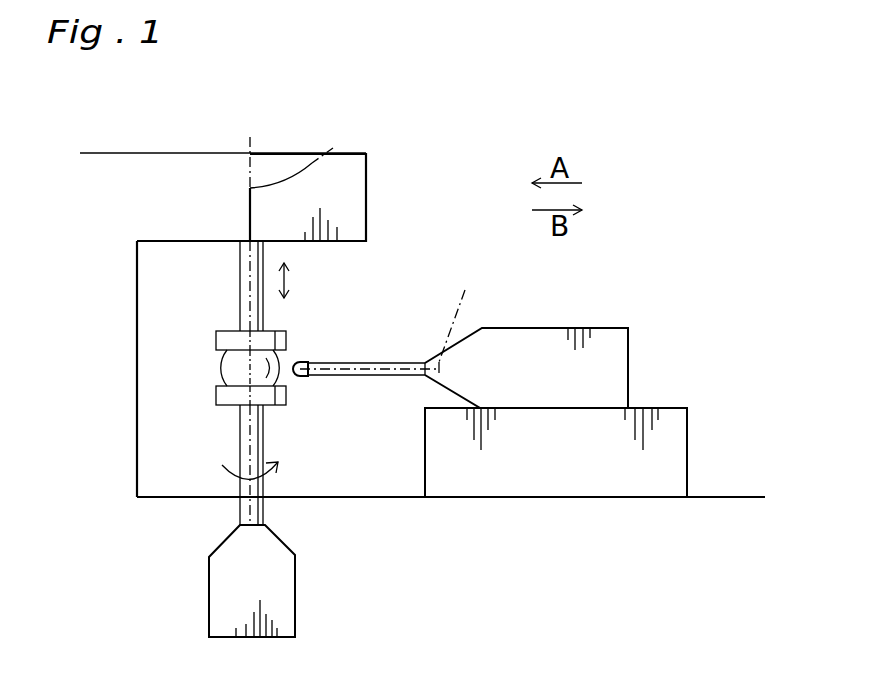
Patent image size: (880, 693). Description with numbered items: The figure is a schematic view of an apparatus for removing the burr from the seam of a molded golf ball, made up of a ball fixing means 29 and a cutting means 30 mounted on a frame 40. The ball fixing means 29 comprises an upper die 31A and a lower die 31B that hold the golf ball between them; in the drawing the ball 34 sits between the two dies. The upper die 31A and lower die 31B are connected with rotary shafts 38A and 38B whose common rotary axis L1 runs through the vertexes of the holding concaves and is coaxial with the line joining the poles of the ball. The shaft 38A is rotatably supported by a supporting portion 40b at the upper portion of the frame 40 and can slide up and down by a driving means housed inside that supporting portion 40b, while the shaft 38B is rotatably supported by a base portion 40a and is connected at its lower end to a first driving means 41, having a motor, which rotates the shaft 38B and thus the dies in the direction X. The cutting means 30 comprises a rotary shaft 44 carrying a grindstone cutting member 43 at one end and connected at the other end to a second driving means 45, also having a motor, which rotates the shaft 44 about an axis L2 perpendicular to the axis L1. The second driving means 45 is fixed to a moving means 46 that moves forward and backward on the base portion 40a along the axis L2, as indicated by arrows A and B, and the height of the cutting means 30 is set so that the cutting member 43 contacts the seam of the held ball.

The ball fixing means 29 is at (269, 439).
The cutting means 30 is at (580, 365).
The upper die 31A is at (219, 333).
The lower die 31B is at (218, 395).
The ball 34 is at (221, 360).
The rotary shaft 38A is at (240, 285).
The rotary shaft 38B is at (265, 422).
The frame 40 is at (422, 320).
The base portion 40a is at (340, 497).
The supporting portion 40b is at (355, 183).
The first driving means 41 is at (282, 592).
The cutting member 43 is at (303, 360).
The rotary shaft 44 is at (367, 324).
The second driving means 45 is at (525, 333).
The moving means 46 is at (665, 420).
The rotary axis L1 is at (304, 154).
The axis L2 is at (468, 317).